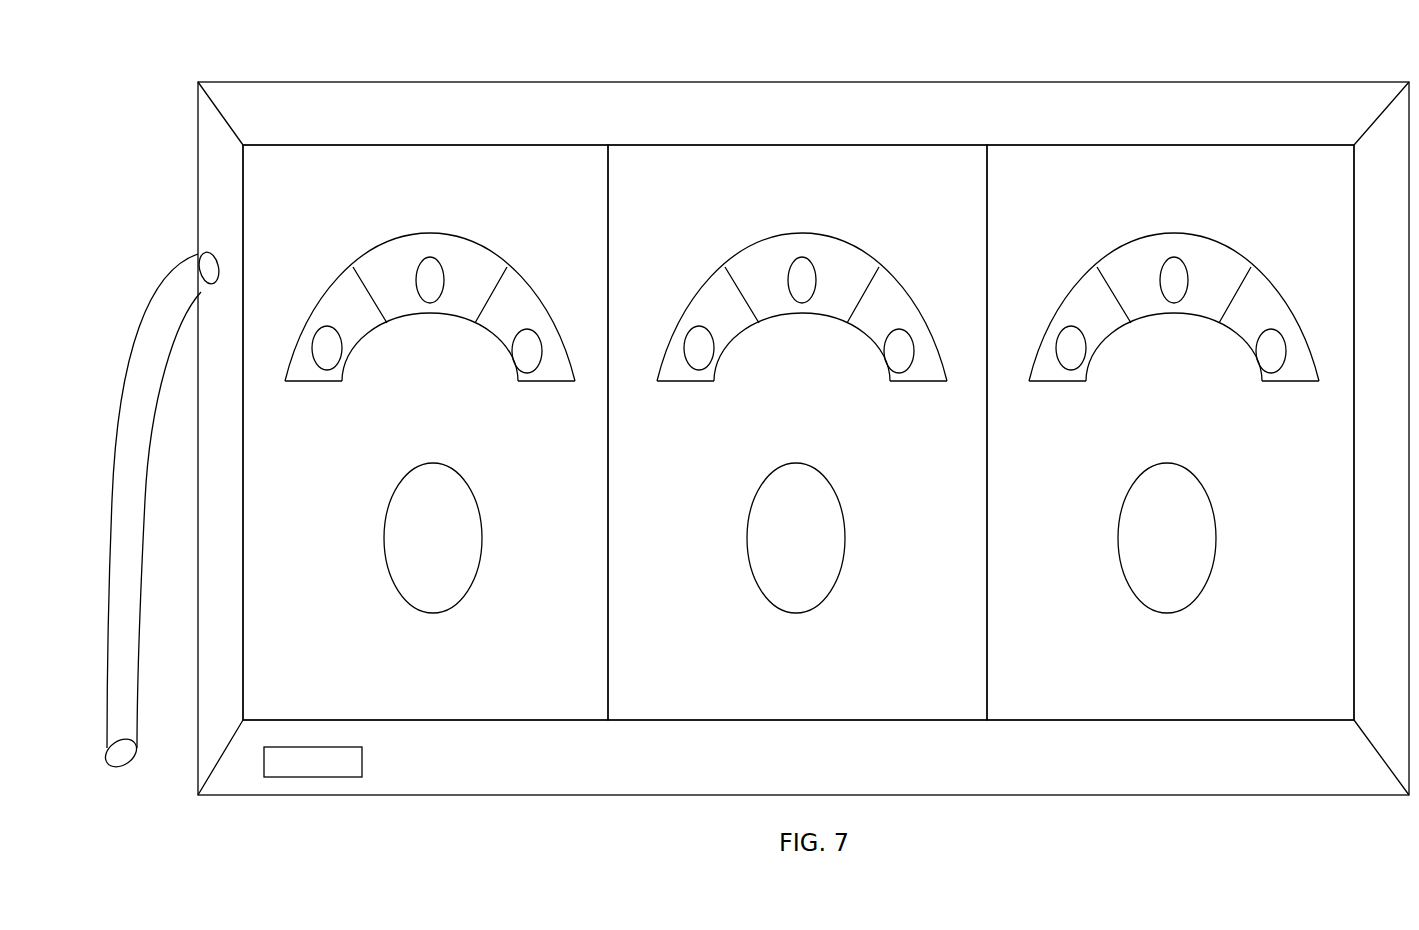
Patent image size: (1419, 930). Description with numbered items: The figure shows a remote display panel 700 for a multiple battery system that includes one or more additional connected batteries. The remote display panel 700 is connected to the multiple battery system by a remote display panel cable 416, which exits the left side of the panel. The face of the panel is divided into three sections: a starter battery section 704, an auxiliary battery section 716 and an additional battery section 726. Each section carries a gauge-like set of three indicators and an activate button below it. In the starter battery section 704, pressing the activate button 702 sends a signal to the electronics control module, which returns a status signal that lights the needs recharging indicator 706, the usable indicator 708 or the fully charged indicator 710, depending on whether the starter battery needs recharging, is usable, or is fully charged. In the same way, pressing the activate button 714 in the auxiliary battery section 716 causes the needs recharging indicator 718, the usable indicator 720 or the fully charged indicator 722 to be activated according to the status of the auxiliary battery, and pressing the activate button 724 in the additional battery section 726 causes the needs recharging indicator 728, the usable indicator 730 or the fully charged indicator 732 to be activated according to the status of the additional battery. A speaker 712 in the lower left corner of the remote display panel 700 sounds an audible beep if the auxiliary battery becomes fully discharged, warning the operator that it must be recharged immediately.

The remote display panel 700 is at (952, 82).
The remote display panel cable 416 is at (131, 388).
The starter battery section 704 is at (425, 411).
The auxiliary battery section 716 is at (797, 409).
The additional battery section 726 is at (1170, 409).
The activate button 702 is at (481, 538).
The activate button 714 is at (844, 538).
The activate button 724 is at (1215, 538).
The needs recharging indicator 706 is at (313, 367).
The usable indicator 708 is at (413, 306).
The fully charged indicator 710 is at (533, 373).
The needs recharging indicator 718 is at (685, 367).
The usable indicator 720 is at (785, 306).
The fully charged indicator 722 is at (905, 373).
The needs recharging indicator 728 is at (1057, 367).
The usable indicator 730 is at (1157, 306).
The fully charged indicator 732 is at (1277, 373).
The speaker 712 is at (322, 747).